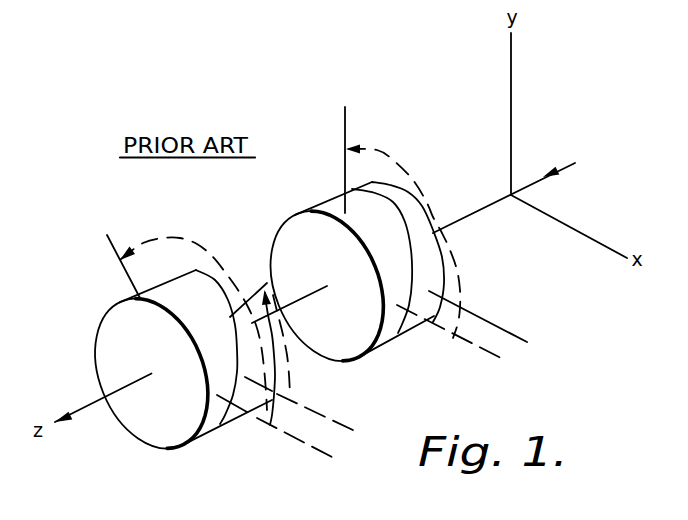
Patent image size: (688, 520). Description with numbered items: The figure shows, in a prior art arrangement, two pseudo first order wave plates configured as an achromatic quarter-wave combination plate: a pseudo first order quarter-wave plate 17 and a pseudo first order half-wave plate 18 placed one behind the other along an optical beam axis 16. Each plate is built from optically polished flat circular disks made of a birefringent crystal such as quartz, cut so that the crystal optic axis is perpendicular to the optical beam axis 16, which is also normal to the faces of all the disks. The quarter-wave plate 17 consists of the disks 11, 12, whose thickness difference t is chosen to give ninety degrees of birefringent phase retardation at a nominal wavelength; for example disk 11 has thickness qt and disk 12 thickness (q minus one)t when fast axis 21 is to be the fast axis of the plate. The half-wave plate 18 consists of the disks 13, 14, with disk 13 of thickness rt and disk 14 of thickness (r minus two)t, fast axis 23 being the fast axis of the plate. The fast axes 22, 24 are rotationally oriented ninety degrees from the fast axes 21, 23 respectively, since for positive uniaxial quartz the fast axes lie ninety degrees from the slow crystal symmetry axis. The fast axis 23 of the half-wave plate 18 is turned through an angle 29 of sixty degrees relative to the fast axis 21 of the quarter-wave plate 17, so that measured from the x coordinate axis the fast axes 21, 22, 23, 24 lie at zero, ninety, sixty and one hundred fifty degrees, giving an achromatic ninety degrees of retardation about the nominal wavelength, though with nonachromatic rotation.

The optically polished flat circular disk 11 is at (362, 188).
The optically polished flat circular disk 12 is at (323, 208).
The optically polished flat circular disk 13 is at (195, 280).
The optically polished flat circular disk 14 is at (157, 294).
The optical beam axis 16 is at (89, 408).
The pseudo first order quarter-wave plate 17 is at (377, 270).
The pseudo first order half-wave plate 18 is at (212, 347).
The fast axis 21 is at (530, 335).
The fast axis 22 is at (348, 112).
The fast axis 23 is at (252, 296).
The fast axis 24 is at (109, 238).
The angle 29 is at (290, 372).